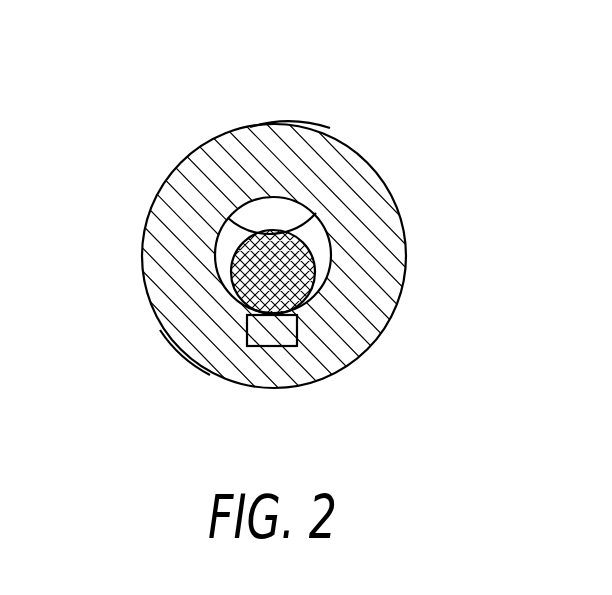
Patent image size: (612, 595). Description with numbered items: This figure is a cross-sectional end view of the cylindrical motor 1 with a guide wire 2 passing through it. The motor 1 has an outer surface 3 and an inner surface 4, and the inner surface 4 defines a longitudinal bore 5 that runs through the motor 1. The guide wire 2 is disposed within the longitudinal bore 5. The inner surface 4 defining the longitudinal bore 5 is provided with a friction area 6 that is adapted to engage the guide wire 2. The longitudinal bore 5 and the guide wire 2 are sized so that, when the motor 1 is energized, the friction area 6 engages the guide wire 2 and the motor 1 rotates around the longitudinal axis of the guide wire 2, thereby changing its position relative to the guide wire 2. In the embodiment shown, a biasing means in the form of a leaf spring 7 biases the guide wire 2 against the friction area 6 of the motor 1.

The motor 1 is at (232, 127).
The guide wire 2 is at (232, 268).
The outer surface 3 is at (293, 127).
The inner surface 4 is at (328, 235).
The longitudinal bore 5 is at (229, 241).
The friction area 6 is at (280, 347).
The leaf spring 7 is at (230, 218).